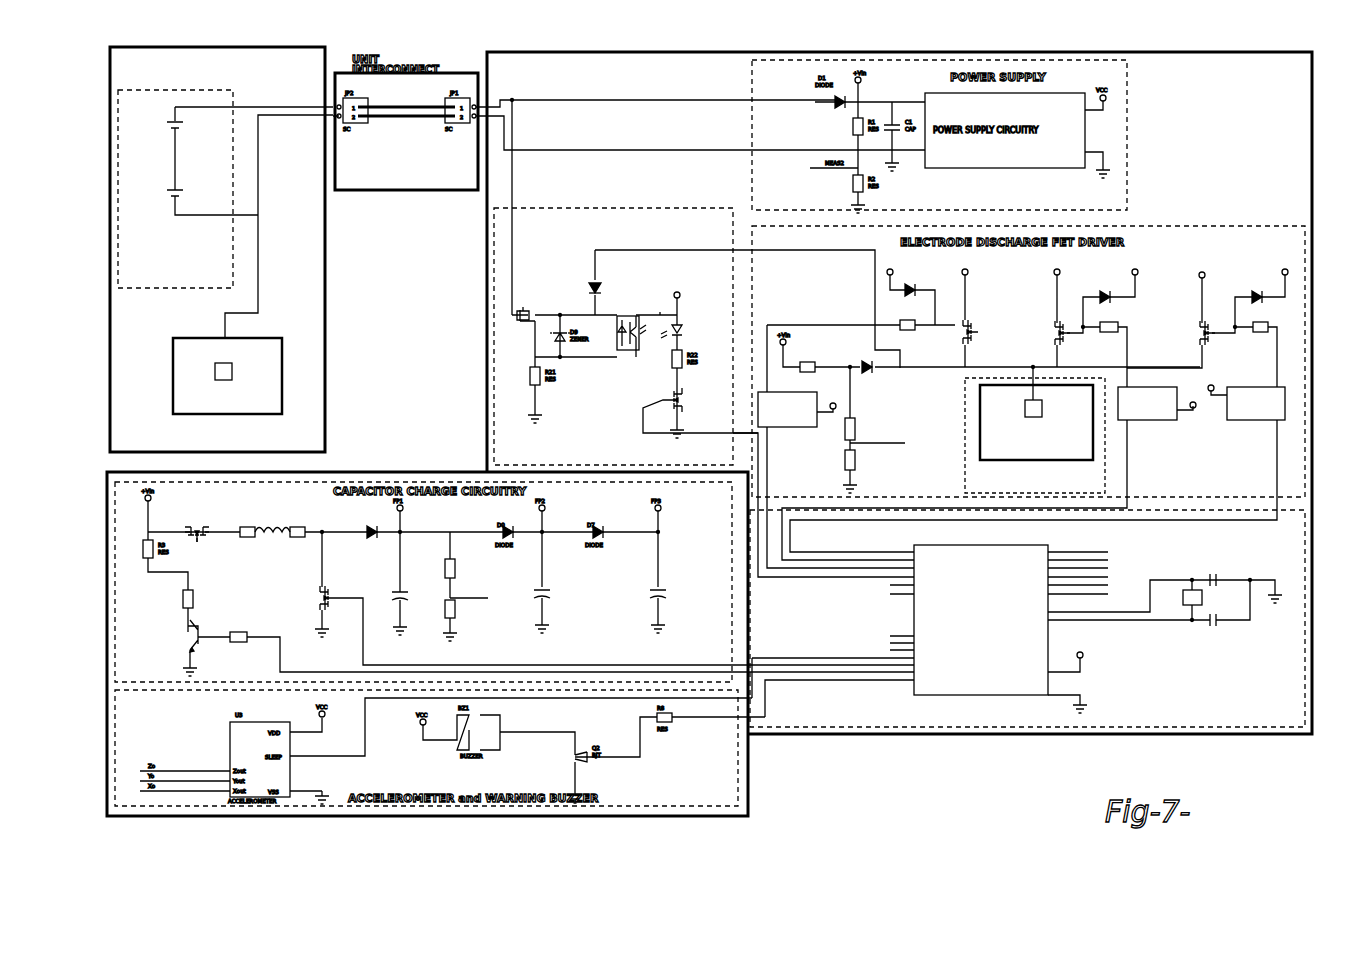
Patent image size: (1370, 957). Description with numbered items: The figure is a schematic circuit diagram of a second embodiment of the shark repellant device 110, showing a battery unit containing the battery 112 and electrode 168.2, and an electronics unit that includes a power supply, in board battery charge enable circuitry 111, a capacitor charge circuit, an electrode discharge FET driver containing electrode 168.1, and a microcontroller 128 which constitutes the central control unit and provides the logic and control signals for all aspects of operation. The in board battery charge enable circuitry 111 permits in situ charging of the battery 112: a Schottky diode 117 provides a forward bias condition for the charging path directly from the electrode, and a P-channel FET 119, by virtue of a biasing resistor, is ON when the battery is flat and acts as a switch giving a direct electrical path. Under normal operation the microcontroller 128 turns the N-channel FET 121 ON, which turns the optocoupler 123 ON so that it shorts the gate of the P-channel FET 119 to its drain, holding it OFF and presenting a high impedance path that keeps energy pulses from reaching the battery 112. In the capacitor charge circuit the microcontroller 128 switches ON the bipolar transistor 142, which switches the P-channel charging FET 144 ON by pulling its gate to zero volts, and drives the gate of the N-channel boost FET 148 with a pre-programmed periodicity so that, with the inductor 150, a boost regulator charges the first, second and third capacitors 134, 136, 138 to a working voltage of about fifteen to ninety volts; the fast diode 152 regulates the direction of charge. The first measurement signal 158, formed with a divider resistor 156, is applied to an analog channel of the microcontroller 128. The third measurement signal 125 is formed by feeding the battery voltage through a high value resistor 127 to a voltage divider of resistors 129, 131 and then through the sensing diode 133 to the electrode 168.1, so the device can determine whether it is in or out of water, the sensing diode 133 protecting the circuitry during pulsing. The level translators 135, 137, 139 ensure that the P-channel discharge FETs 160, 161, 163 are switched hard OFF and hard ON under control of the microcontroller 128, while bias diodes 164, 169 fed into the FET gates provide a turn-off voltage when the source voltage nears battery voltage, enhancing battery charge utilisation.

The device 110 is at (1058, 39).
The battery 112 is at (290, 47).
The in board battery charge enable circuitry 111 is at (555, 212).
The diode D10 117 is at (632, 272).
The FET-6 119 is at (523, 292).
The FET-7 121 is at (650, 404).
The optocoupler 123 is at (672, 307).
The MEAS3 signal 125 is at (905, 440).
The high value resistor 127 is at (801, 355).
The microcontroller 128 is at (1050, 638).
The resistor 129 is at (875, 416).
The resistor 131 is at (872, 463).
The diode D8 133 is at (856, 357).
The capacitor C2 134 is at (405, 580).
The level translator 135 is at (785, 428).
The capacitor C3 136 is at (552, 588).
The level translator 137 is at (1148, 420).
The capacitor C4 138 is at (662, 585).
The level translator 139 is at (1245, 422).
The transistor Q1 142 is at (214, 627).
The FET-3 144 is at (173, 520).
The FET-4 148 is at (306, 603).
The inductor L1 150 is at (316, 510).
The fast diode D2 152 is at (378, 514).
The resistor R6 156 is at (458, 648).
The MEAS1 signal 158 is at (483, 603).
The FET-1 160 is at (978, 305).
The FET-2 161 is at (1062, 297).
The FET-5 163 is at (1215, 318).
The diode D6 164 is at (1110, 287).
The diode D7 169 is at (1260, 280).
The electrode 168.1 is at (1030, 463).
The electrode 2 168.2 is at (273, 365).